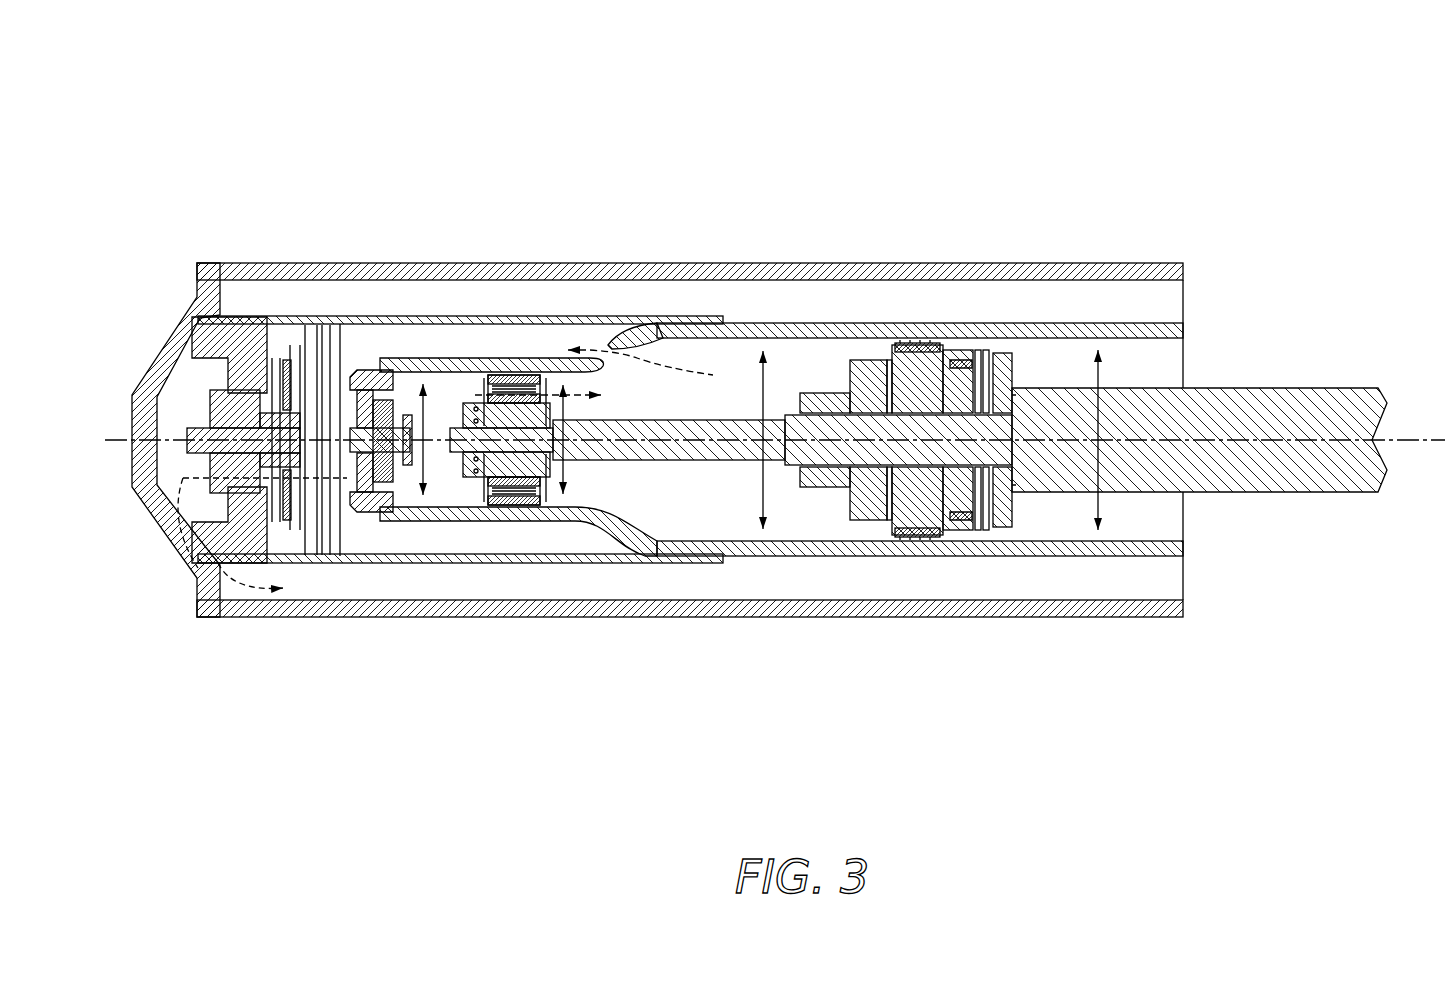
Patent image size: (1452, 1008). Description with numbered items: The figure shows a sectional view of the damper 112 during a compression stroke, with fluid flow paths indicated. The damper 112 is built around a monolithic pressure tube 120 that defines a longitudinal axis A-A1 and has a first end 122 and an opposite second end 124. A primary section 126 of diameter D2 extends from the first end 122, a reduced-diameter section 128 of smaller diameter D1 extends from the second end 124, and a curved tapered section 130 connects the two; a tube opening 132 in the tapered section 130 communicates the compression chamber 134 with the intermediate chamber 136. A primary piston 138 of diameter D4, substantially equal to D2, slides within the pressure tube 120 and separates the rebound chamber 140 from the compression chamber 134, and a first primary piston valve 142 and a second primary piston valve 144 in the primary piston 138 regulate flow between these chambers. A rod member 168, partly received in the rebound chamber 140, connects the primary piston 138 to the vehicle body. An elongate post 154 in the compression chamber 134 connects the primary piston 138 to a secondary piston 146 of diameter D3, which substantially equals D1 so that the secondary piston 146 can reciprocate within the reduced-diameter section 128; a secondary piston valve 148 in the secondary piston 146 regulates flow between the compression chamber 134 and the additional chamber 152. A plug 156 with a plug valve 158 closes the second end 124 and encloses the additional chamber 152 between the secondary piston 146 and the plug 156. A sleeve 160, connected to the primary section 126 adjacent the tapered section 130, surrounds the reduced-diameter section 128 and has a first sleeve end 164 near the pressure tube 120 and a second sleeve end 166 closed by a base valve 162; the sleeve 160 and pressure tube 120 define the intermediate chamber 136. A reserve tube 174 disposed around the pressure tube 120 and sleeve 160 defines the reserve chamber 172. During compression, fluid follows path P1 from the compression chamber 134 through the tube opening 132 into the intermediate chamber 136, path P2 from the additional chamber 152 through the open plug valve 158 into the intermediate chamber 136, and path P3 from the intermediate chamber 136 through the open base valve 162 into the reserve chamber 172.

The damper 112 is at (1266, 88).
The pressure tube 120 is at (898, 310).
The first end 122 is at (1215, 527).
The second end 124 is at (352, 359).
The primary section 126 is at (805, 322).
The reduced-diameter section 128 is at (415, 515).
The tapered section 130 is at (625, 358).
The tube opening 132 is at (603, 336).
The compression chamber 134 is at (677, 474).
The intermediate chamber 136 is at (506, 346).
The primary piston 138 is at (858, 569).
The rebound chamber 140 is at (1033, 530).
The first primary piston valve 142 is at (935, 340).
The second primary piston valve 144 is at (935, 528).
The secondary piston 146 is at (466, 495).
The secondary piston valve 148 is at (533, 357).
The additional chamber 152 is at (448, 496).
The elongate post 154 is at (722, 420).
The plug 156 is at (353, 397).
The plug valve 158 is at (335, 515).
The sleeve 160 is at (478, 327).
The base valve 162 is at (161, 460).
The first sleeve end 164 is at (647, 303).
The second sleeve end 166 is at (231, 305).
The rod member 168 is at (1332, 478).
The reserve chamber 172 is at (980, 295).
The reserve tube 174 is at (1017, 282).
The diameter of reduced-diameter section D1 is at (423, 370).
The diameter of primary section D2 is at (1103, 542).
The diameter of secondary piston D3 is at (563, 505).
The diameter of primary piston D4 is at (768, 542).
The fluid flow path P1 is at (688, 358).
The fluid flow path P2 is at (462, 358).
The fluid flow path P3 is at (188, 512).
The longitudinal axis A-A1 is at (1405, 440).